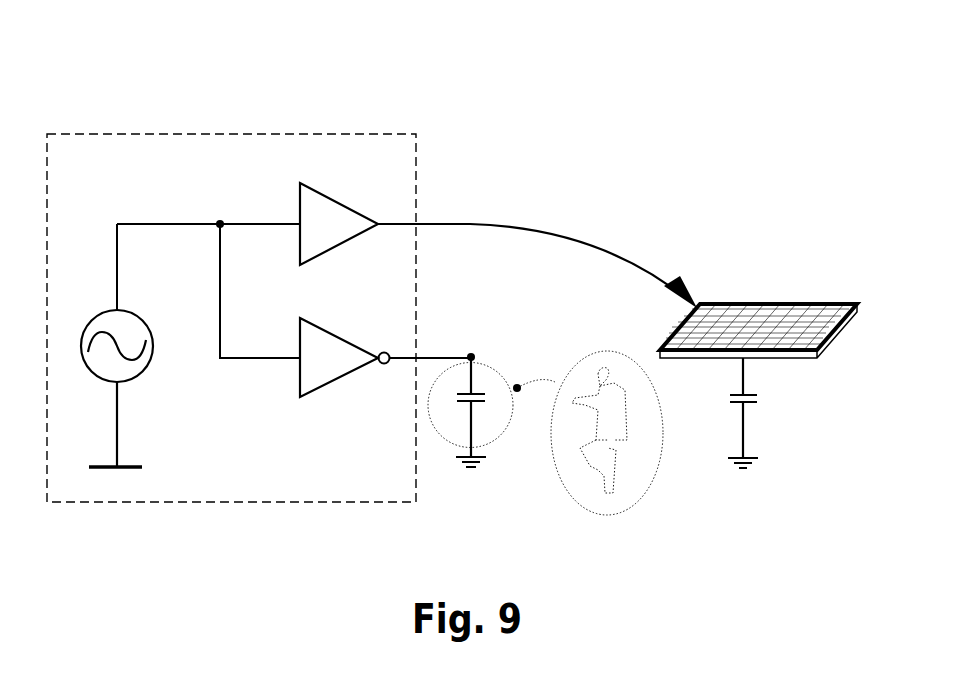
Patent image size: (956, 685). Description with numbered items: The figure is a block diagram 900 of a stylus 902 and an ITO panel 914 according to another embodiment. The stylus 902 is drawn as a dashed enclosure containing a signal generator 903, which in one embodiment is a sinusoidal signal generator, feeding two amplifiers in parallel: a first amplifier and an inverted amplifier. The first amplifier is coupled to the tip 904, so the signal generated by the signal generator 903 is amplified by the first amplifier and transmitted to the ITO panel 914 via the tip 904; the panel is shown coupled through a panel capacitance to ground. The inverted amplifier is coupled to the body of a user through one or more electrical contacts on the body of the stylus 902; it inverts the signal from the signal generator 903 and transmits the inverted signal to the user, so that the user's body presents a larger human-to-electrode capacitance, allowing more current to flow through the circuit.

The block diagram 900 is at (416, 101).
The stylus 902 is at (259, 318).
The signal generator 903 is at (151, 388).
The tip 904 is at (537, 280).
The ITO panel 914 is at (777, 304).